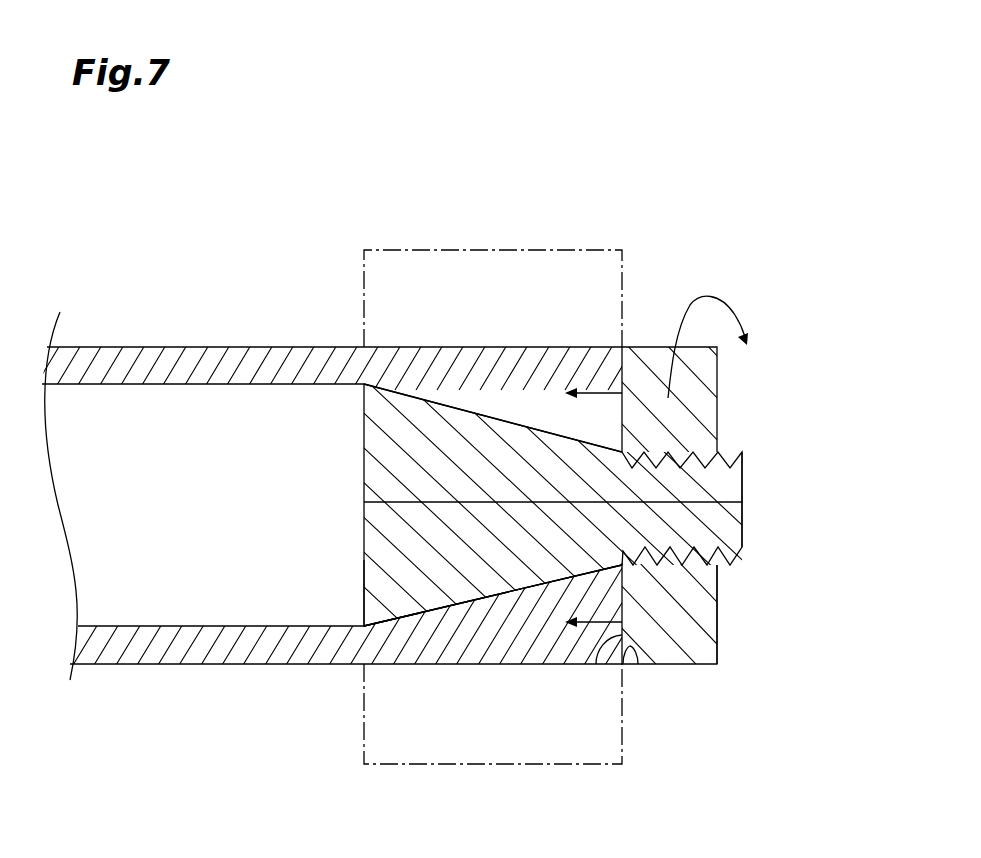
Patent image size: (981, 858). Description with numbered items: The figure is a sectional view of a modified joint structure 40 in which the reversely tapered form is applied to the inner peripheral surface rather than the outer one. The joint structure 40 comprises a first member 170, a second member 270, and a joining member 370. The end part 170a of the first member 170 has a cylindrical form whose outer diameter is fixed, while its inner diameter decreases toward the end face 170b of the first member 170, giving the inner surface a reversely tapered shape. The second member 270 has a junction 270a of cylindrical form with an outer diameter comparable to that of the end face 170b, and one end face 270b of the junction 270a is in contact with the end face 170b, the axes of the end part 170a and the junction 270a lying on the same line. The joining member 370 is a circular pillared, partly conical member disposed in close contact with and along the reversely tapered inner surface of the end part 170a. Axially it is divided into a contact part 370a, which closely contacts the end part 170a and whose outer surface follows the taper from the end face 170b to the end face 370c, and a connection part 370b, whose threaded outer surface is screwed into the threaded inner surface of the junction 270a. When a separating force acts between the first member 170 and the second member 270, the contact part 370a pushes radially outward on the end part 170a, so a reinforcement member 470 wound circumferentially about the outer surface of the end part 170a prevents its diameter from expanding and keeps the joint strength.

The joint structure 40 is at (545, 165).
The first member 170 is at (299, 343).
The end part 170a is at (467, 642).
The end face 170b is at (631, 648).
The second member 270 is at (689, 673).
The junction 270a is at (698, 627).
The end face 270b is at (603, 641).
The joining member 370 is at (357, 545).
The contact part 370a is at (492, 501).
The connection part 370b is at (680, 501).
The end face 370c is at (364, 588).
The reinforcement member 470 is at (585, 248).